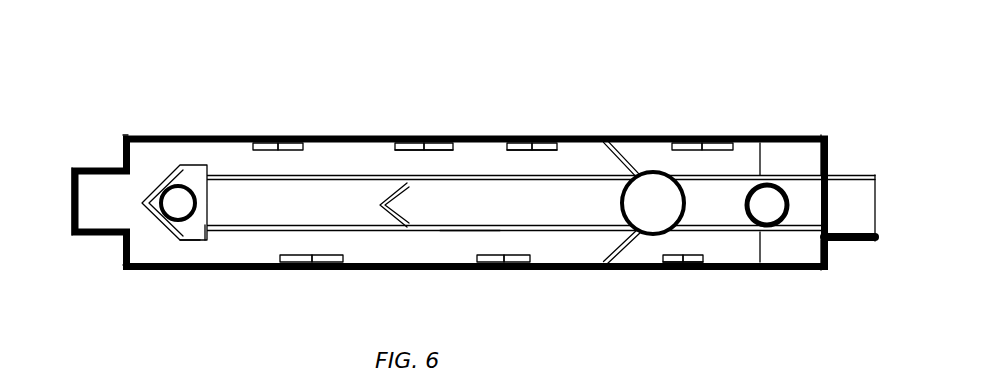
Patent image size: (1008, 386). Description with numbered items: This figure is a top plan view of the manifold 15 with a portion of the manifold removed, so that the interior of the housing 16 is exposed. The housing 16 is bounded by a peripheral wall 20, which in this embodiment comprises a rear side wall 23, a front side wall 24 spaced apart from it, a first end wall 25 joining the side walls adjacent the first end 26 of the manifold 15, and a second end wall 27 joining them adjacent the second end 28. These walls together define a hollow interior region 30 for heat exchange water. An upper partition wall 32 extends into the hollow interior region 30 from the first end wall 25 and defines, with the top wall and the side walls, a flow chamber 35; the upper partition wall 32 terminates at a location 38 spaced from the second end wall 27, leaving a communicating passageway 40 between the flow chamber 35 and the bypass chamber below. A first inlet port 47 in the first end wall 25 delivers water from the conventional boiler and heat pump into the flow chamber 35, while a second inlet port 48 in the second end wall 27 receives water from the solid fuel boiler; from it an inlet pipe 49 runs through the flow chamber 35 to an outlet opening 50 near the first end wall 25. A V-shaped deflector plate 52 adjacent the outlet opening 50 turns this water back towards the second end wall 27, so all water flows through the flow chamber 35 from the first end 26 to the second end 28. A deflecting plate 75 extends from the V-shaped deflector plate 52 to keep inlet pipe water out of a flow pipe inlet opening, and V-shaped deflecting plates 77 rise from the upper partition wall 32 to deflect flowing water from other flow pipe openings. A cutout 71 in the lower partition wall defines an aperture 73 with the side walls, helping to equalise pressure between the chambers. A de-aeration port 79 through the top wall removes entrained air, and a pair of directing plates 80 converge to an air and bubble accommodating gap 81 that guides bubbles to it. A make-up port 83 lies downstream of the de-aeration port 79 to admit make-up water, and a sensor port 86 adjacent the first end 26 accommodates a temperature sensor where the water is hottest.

The manifold 15 is at (625, 87).
The housing 16 is at (263, 135).
The peripheral wall 20 is at (545, 270).
The rear side wall 23 is at (465, 137).
The front side wall 24 is at (406, 265).
The first end wall 25 is at (120, 248).
The first end 26 is at (123, 137).
The second end wall 27 is at (828, 250).
The second end 28 is at (830, 250).
The hollow interior region 30 is at (336, 148).
The upper partition wall 32 is at (487, 137).
The flow chamber 35 is at (250, 252).
The location 38 is at (762, 160).
The communicating passageway 40 is at (790, 160).
The first inlet port 47 is at (72, 203).
The second inlet port 48 is at (865, 200).
The inlet pipe 49 is at (478, 233).
The outlet opening 50 is at (188, 164).
The V-shaped deflector plate 52 is at (178, 163).
The cutout 71 is at (285, 142).
The aperture 73 is at (305, 143).
The deflecting plate 75 is at (198, 232).
The V-shaped deflecting plates 77 is at (408, 207).
The de-aeration port 79 is at (653, 170).
The directing plates 80 is at (608, 157).
The air and bubble accommodating gap 81 is at (672, 230).
The make-up port 83 is at (788, 206).
The sensor port 86 is at (180, 228).